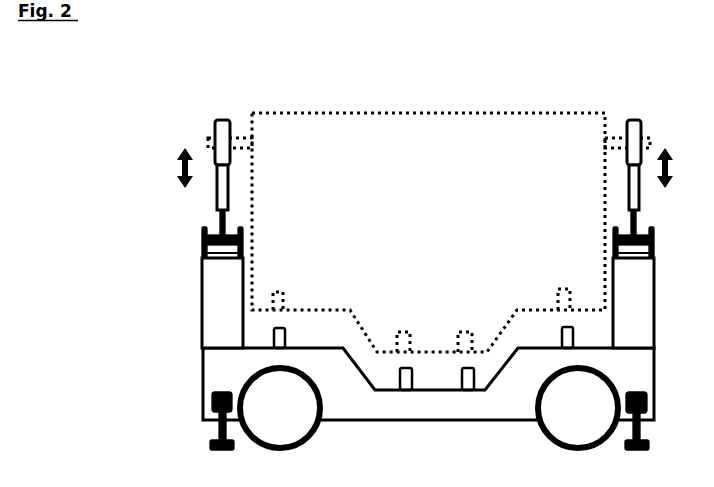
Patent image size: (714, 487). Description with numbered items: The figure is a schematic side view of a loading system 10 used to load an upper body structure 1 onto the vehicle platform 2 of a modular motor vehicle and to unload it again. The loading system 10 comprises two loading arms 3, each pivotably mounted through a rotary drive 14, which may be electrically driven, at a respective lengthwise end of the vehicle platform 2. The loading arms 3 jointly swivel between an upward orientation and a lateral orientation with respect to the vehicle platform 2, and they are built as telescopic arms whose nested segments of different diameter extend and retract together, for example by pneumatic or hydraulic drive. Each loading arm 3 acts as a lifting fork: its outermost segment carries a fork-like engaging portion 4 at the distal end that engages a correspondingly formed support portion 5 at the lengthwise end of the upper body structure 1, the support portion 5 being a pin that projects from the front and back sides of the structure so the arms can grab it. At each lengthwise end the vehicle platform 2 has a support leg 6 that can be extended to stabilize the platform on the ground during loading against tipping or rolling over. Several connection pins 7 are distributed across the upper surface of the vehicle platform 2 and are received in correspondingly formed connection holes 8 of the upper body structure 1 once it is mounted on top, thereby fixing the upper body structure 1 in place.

The upper body structure 1 is at (471, 127).
The vehicle platform 2 is at (186, 346).
The loading arm 3 is at (421, 214).
The engaging portion 4 is at (218, 120).
The support portion 5 is at (240, 138).
The support leg 6 is at (212, 400).
The connection pin 7 is at (286, 340).
The connection hole 8 is at (280, 292).
The loading system 10 is at (112, 116).
The rotary drive 14 is at (202, 240).